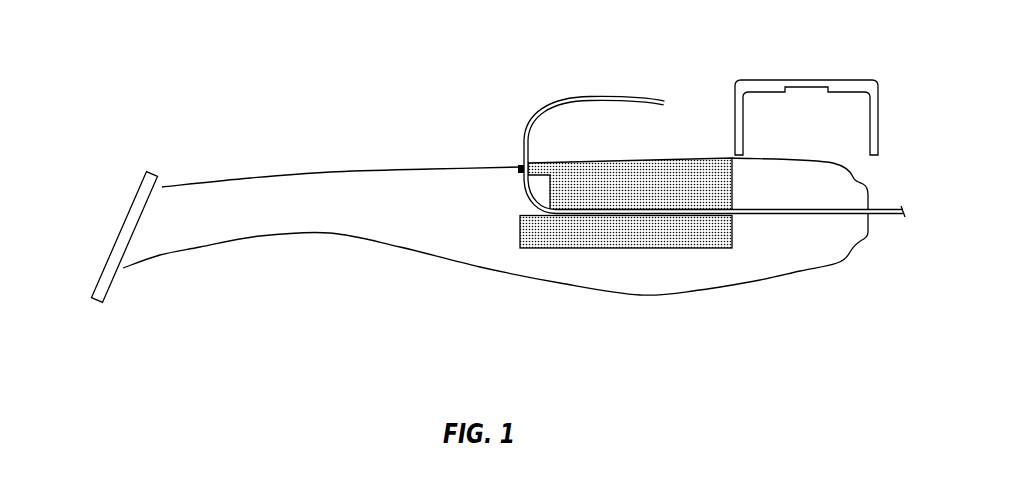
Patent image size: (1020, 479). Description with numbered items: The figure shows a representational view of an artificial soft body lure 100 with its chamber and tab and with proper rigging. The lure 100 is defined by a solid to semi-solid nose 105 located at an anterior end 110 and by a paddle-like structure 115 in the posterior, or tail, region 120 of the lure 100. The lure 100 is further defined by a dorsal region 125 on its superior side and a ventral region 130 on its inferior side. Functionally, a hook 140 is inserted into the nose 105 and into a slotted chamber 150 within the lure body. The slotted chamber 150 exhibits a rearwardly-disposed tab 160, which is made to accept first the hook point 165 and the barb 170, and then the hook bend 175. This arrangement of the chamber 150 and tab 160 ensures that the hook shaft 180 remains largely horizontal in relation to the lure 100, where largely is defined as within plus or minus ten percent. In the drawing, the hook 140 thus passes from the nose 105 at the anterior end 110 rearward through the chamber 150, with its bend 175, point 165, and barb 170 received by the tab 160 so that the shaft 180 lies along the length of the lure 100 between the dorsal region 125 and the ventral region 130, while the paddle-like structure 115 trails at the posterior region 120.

The soft body lure 100 is at (170, 135).
The nose 105 is at (841, 86).
The anterior end 110 is at (959, 222).
The paddle-like structure 115 is at (137, 198).
The posterior region 120 is at (86, 242).
The dorsal region 125 is at (692, 148).
The ventral region 130 is at (662, 307).
The hook 140 is at (757, 218).
The slotted chamber 150 is at (642, 244).
The tab 160 is at (551, 178).
The hook point 165 is at (657, 103).
The barb 170 is at (632, 104).
The hook bend 175 is at (531, 145).
The hook shaft 180 is at (663, 210).